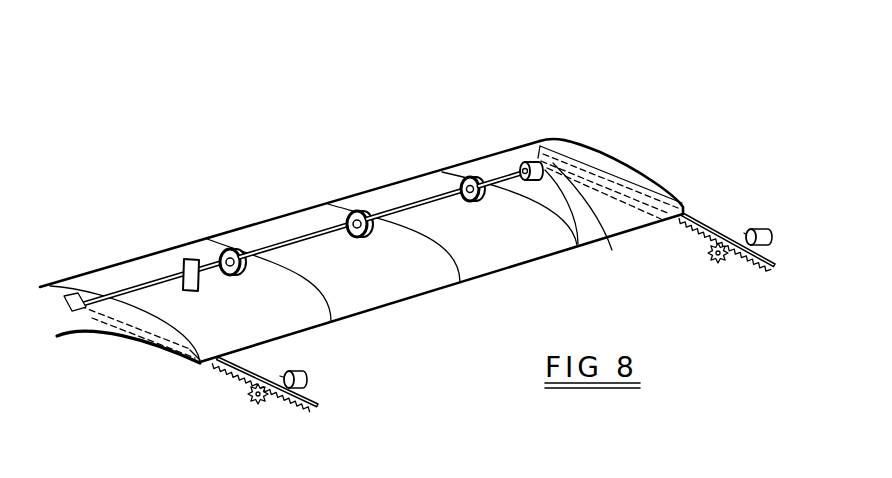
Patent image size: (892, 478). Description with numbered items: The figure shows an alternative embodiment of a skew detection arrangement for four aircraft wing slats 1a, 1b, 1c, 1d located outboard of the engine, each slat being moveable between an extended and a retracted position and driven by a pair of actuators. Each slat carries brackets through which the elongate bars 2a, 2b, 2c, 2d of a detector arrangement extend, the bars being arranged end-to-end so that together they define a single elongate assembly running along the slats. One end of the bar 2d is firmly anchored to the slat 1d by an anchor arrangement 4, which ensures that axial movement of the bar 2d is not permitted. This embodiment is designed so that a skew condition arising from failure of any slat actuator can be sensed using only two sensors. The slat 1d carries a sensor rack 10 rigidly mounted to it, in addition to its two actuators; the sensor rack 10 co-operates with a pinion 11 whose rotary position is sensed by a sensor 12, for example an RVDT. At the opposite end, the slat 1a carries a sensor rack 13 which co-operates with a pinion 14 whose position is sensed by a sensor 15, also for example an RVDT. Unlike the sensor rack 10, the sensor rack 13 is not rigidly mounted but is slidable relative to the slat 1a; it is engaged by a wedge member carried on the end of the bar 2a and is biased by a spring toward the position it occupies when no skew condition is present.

The slat 1a is at (117, 250).
The slat 1b is at (250, 213).
The slat 1c is at (388, 175).
The slat 1d is at (490, 147).
The bar 2a is at (153, 278).
The bar 2b is at (303, 233).
The bar 2c is at (423, 193).
The bar 2d is at (507, 170).
The anchor arrangement 4 is at (612, 250).
The sensor rack 10 is at (682, 213).
The pinion 11 is at (714, 262).
The sensor 12 is at (761, 230).
The sensor rack 13 is at (213, 368).
The pinion 14 is at (252, 402).
The sensor 15 is at (308, 373).